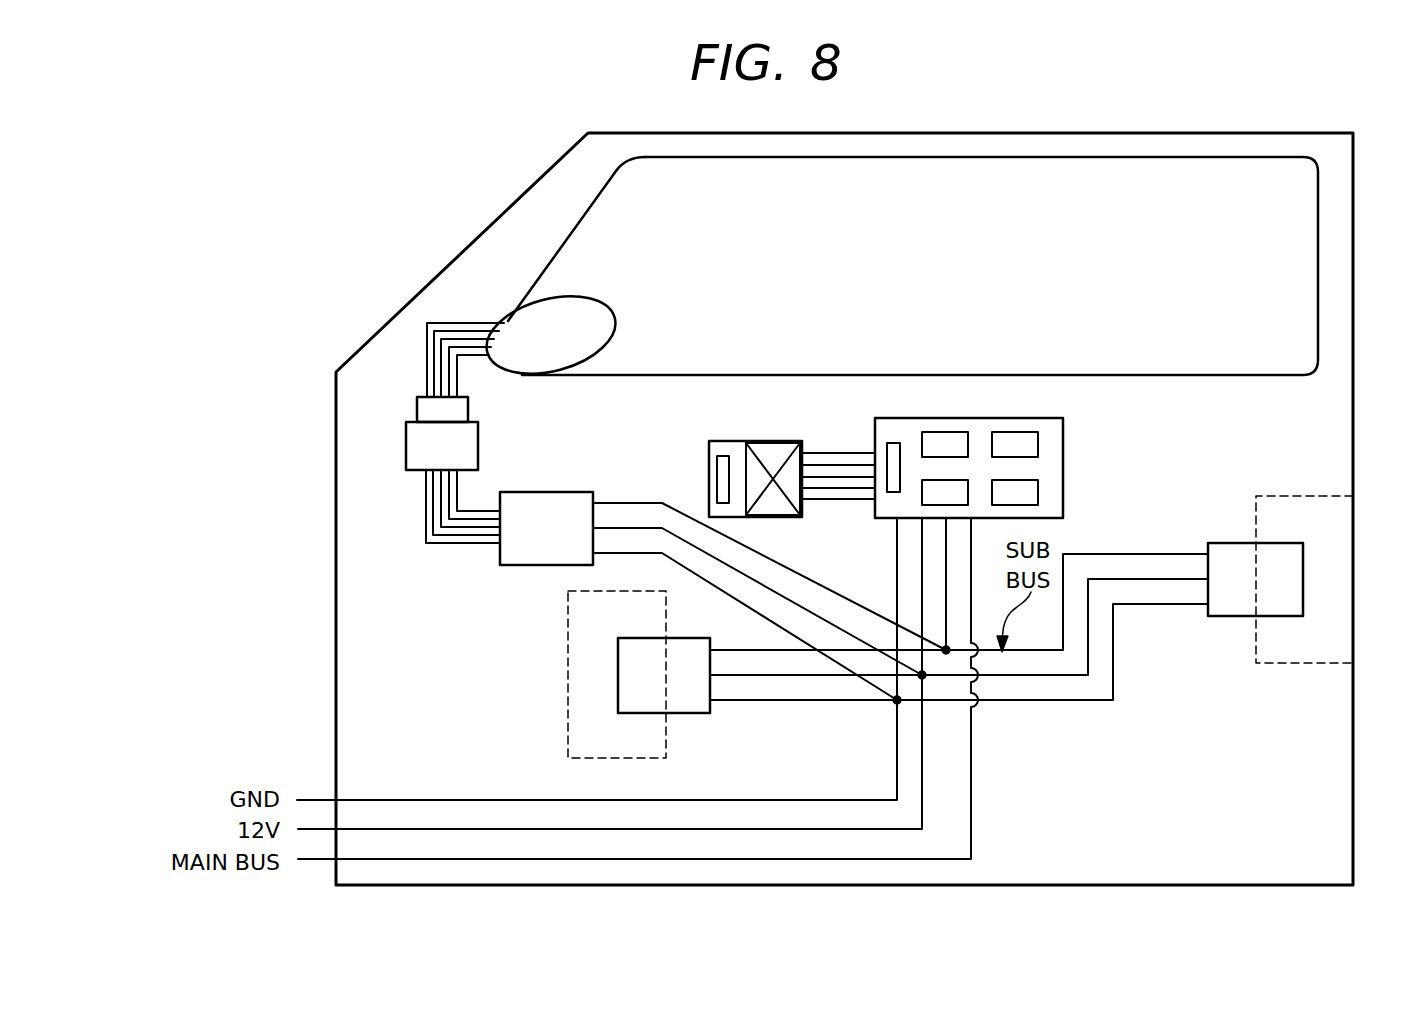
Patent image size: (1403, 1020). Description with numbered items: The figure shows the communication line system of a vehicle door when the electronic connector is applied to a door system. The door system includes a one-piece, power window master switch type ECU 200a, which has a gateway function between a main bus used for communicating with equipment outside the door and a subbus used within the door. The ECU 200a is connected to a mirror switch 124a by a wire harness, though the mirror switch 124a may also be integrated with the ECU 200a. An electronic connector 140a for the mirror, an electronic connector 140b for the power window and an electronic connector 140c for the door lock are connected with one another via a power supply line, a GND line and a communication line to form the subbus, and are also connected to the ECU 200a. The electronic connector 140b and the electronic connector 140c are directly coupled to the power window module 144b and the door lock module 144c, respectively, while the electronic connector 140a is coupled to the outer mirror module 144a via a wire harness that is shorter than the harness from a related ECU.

The outer mirror module 144a is at (590, 298).
The power window module 144b is at (568, 628).
The door lock module 144c is at (1290, 663).
The electronic connector for a mirror 140a is at (567, 492).
The electronic connector for a power window 140b is at (688, 714).
The electronic connector for a door lock 140c is at (1226, 543).
The mirror switch 124a is at (771, 441).
The ECU 200a is at (1066, 450).